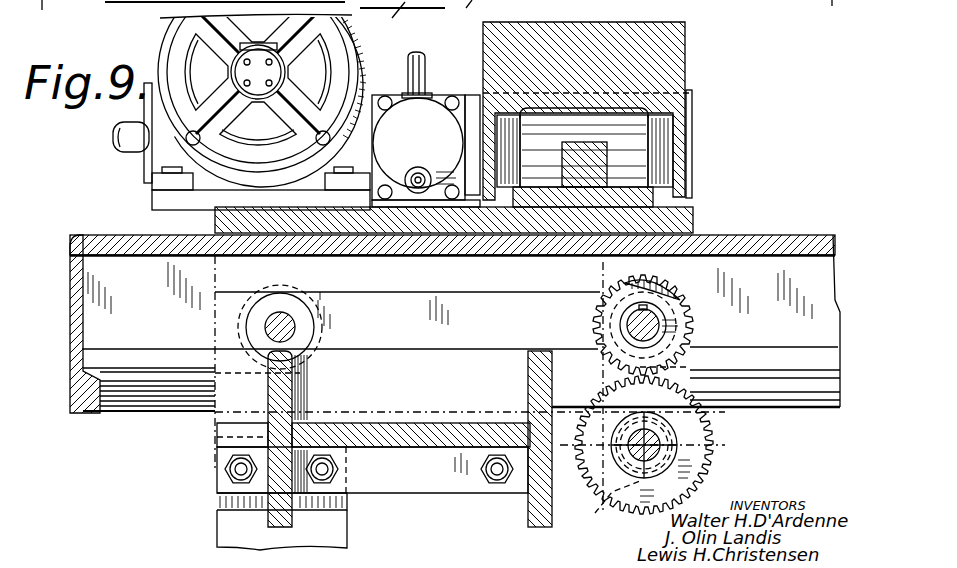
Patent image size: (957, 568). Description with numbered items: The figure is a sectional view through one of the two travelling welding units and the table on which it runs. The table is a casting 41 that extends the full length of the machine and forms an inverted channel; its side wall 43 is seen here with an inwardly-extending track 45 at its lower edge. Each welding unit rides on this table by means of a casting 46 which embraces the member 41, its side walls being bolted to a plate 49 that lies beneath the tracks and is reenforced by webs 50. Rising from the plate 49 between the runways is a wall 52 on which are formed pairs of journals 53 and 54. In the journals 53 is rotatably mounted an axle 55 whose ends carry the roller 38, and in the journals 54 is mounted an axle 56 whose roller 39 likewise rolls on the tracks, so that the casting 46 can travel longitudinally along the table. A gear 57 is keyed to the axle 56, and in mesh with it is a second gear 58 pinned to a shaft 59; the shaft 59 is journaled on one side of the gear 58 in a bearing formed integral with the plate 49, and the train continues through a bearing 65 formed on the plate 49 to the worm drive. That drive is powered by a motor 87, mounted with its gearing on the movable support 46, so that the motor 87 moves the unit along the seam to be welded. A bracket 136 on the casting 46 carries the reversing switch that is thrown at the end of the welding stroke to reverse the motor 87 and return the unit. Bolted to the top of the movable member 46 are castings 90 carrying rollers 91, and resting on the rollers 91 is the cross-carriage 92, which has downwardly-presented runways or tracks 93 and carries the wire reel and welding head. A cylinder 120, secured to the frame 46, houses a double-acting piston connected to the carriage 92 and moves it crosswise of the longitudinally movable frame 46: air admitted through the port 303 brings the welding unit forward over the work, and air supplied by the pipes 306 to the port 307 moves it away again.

The motor 87 is at (180, 44).
The port 303 is at (428, 68).
The pipes 306 is at (422, 173).
The ports 307 is at (466, 8).
The cylinder 120 is at (426, 151).
The carriage 92 is at (674, 40).
The runways or tracks 93 is at (693, 100).
The castings 90 is at (660, 110).
The rollers 91 is at (668, 142).
The casting 46 is at (693, 217).
The roller 39 is at (663, 300).
The casting 41 is at (800, 236).
The side wall 43 is at (97, 313).
The track 45 is at (156, 366).
The roller 38 is at (300, 284).
The journals 53 is at (314, 316).
The axle 55 is at (300, 328).
The wall 52 is at (225, 372).
The webs 50 is at (282, 395).
The plate 49 is at (479, 448).
The bracket 136 is at (330, 532).
The bearing 65 is at (601, 394).
The journals 54 is at (692, 318).
The axle 56 is at (603, 318).
The gear 57 is at (601, 330).
The gear 58 is at (697, 431).
The shaft 59 is at (670, 457).